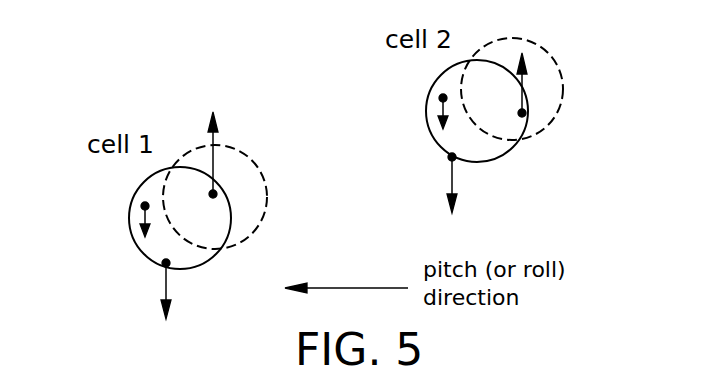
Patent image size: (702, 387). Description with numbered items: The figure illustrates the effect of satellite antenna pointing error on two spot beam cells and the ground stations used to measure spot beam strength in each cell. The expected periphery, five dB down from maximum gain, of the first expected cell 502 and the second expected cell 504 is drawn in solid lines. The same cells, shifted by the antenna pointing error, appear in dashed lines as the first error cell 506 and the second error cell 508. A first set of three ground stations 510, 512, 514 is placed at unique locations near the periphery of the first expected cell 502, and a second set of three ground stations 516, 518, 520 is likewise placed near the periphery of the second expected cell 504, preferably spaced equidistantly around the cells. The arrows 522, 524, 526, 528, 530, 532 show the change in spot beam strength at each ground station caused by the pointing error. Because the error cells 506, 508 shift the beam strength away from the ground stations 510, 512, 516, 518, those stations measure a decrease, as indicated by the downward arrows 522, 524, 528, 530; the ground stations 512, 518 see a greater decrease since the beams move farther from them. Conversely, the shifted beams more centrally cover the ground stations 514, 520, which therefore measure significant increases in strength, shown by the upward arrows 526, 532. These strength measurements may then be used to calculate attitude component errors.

The first expected cell 502 is at (133, 243).
The second expected cell 504 is at (503, 155).
The first error cell 506 is at (267, 210).
The second error cell 508 is at (564, 91).
The ground station 510 is at (145, 206).
The ground station 512 is at (166, 263).
The ground station 514 is at (213, 194).
The ground station 516 is at (443, 98).
The ground station 518 is at (452, 157).
The ground station 520 is at (522, 113).
The arrow 522 is at (138, 215).
The arrow 524 is at (160, 293).
The arrow 526 is at (213, 140).
The arrow 528 is at (438, 115).
The arrow 530 is at (448, 200).
The arrow 532 is at (523, 64).